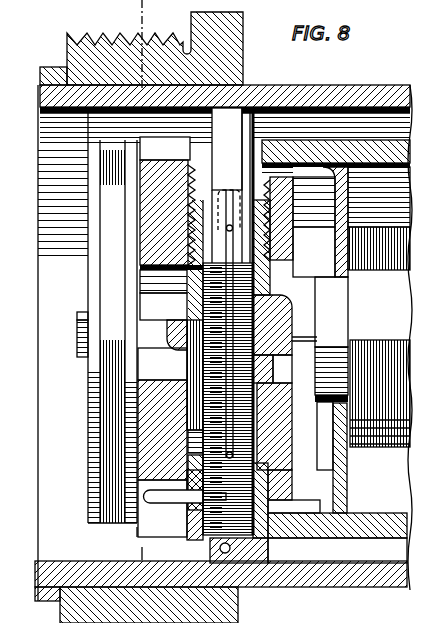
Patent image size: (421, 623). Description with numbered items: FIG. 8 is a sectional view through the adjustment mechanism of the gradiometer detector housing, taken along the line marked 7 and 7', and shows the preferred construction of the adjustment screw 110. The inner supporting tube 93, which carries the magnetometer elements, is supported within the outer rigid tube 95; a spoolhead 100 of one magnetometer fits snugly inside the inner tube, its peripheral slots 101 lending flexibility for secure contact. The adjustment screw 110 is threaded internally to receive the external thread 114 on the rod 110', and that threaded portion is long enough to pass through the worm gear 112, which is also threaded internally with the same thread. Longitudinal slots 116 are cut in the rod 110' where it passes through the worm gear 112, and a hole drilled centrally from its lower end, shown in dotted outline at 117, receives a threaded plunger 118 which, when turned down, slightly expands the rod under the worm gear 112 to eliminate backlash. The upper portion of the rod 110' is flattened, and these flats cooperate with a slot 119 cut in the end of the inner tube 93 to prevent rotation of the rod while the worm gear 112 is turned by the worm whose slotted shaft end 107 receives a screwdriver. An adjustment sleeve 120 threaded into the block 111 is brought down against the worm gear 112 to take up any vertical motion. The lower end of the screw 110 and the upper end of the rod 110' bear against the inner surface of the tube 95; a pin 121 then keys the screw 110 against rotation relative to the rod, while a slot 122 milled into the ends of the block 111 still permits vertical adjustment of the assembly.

The feedback coil 7 is at (123, 44).
The section line 7' is at (105, 541).
The inner supporting tube 93 is at (353, 538).
The outer supporting tube 95 is at (45, 97).
The spoolhead 100 is at (347, 490).
The slots 101 is at (303, 228).
The adjustment screw 107 is at (77, 322).
The adjustment screw 110 is at (221, 592).
The rod 110' is at (267, 83).
The block 111 is at (292, 472).
The worm gear 112 is at (163, 348).
The external thread 114 is at (250, 415).
The longitudinal slots 116 is at (240, 190).
The plunger head 117 is at (218, 190).
The threaded plunger 118 is at (262, 548).
The slot 119 is at (190, 156).
The adjustment sleeve 120 is at (183, 293).
The pin 121 is at (137, 527).
The slot 122 is at (168, 510).